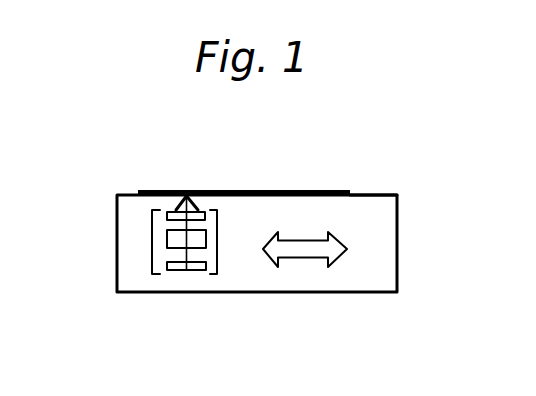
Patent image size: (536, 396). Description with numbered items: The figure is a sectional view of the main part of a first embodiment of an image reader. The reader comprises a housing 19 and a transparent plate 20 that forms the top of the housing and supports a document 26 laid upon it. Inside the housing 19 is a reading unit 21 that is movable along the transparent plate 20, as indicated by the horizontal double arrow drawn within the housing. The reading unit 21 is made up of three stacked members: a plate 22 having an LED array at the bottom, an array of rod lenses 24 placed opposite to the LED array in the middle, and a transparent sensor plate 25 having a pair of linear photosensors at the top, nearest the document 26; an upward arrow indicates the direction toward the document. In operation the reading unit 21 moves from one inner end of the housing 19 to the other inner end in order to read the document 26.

The housing 19 is at (397, 253).
The transparent plate 20 is at (375, 195).
The reading unit 21 is at (152, 235).
The plate having an LED array 22 is at (190, 270).
The array of rod lenses 24 is at (197, 240).
The transparent sensor plate 25 is at (197, 217).
The document 26 is at (163, 190).